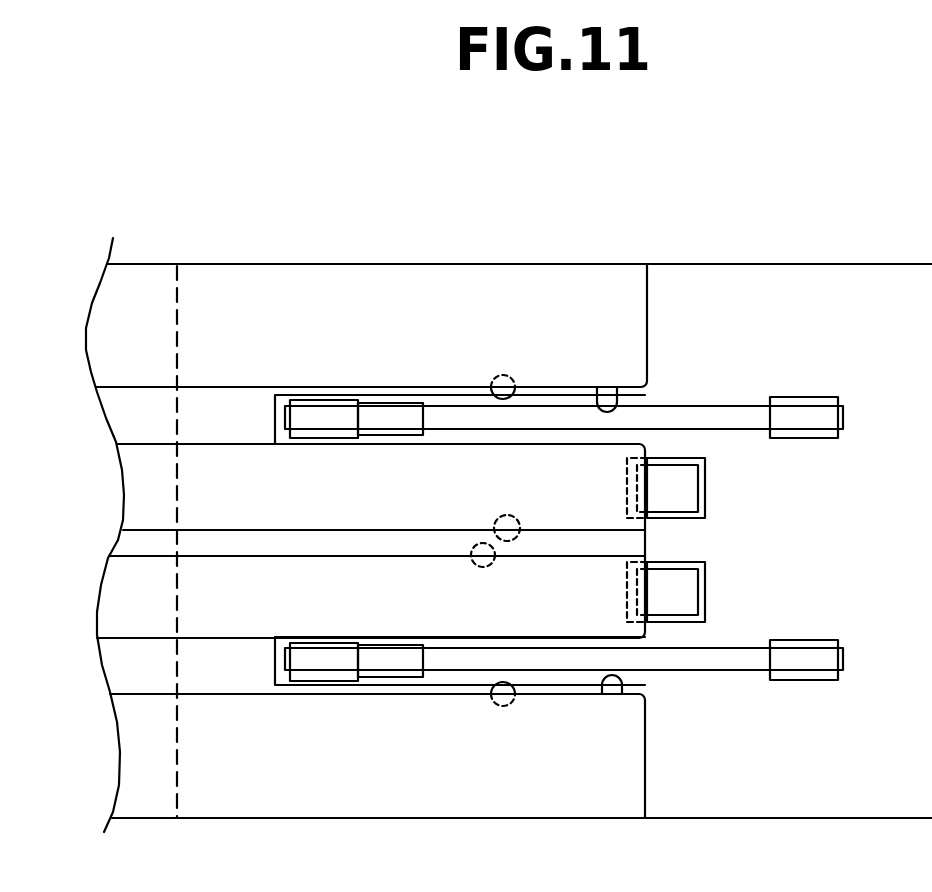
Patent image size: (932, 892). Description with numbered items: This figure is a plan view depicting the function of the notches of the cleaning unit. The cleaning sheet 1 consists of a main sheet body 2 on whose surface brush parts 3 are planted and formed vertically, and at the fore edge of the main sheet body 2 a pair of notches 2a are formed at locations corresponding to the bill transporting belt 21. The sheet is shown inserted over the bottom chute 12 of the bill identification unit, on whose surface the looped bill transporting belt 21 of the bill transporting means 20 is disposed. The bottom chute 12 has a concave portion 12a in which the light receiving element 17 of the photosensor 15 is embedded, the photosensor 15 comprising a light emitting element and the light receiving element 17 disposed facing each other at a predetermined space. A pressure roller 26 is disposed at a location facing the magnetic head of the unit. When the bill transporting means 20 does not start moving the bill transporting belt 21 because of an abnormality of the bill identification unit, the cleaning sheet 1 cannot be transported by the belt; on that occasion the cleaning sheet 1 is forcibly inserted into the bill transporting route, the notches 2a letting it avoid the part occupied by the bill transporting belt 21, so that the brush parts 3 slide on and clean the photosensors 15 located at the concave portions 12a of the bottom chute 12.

The cleaning sheet 1 is at (533, 300).
The main sheet body 2 is at (348, 292).
The notches 2a is at (598, 386).
The brush parts 3 is at (242, 388).
The bottom chute 12 is at (853, 283).
The concave portion 12a is at (497, 383).
The photosensor 15 is at (528, 380).
The light receiving element 17 is at (503, 385).
The bill transporting means 20 is at (832, 376).
The bill transporting belt 21 is at (720, 405).
The pressure roller 26 is at (678, 492).